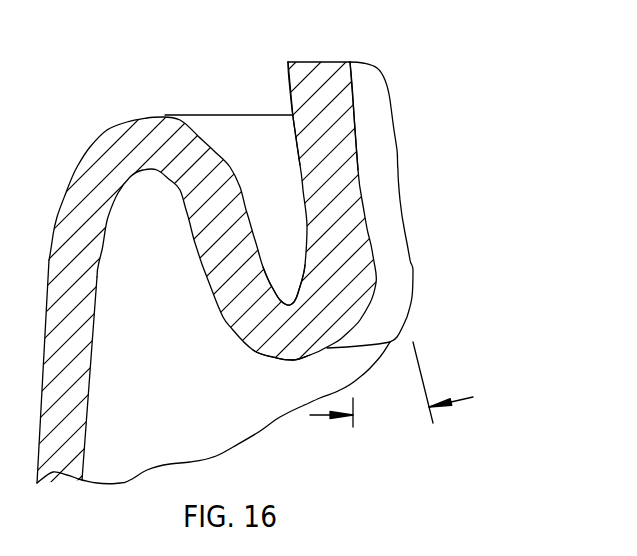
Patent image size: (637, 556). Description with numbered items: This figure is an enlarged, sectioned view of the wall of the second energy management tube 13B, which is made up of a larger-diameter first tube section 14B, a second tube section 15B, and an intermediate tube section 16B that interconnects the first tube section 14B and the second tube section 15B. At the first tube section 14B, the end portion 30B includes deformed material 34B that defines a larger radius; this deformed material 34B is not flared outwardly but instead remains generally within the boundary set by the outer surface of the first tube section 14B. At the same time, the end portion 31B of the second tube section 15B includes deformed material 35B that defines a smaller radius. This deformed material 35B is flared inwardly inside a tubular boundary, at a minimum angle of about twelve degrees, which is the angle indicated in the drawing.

The second energy management tube 13B is at (450, 100).
The first tube section 14B is at (53, 474).
The second tube section 15B is at (327, 72).
The intermediate tube section 16B is at (240, 205).
The end portion of the first tube section 30B is at (190, 140).
The end portion of the second tube section 31B is at (302, 347).
The deformed material 34B is at (127, 155).
The deformed material 35B is at (273, 340).